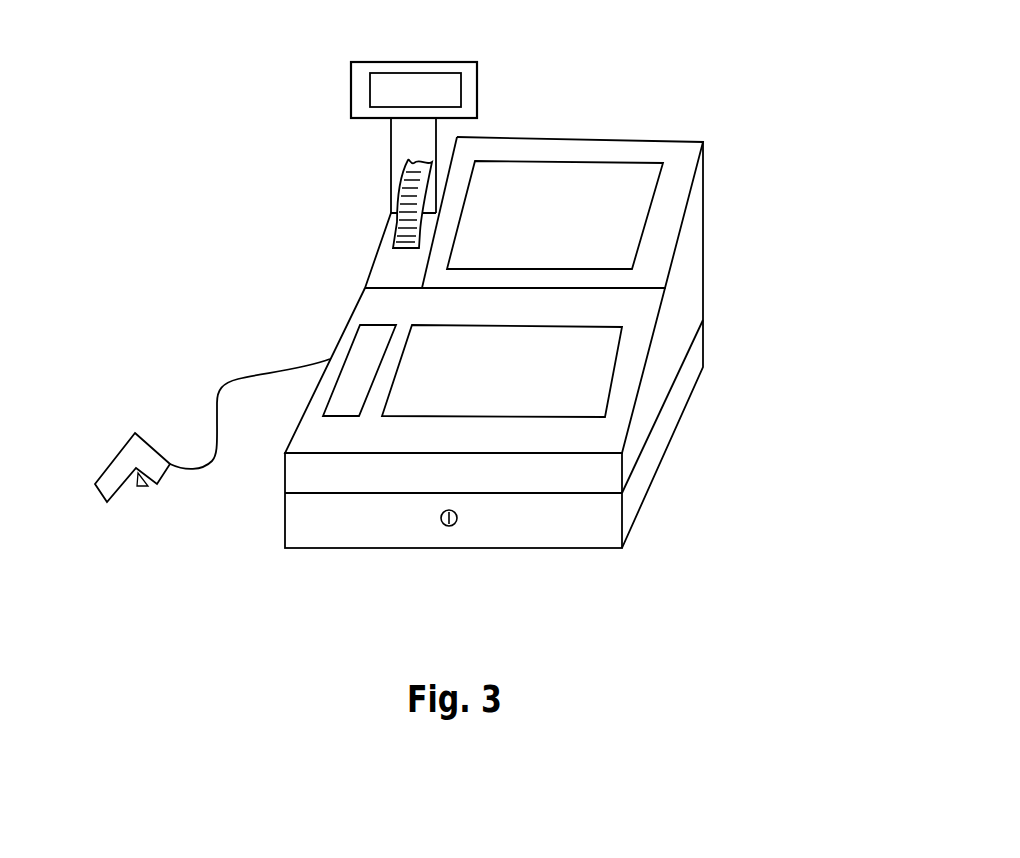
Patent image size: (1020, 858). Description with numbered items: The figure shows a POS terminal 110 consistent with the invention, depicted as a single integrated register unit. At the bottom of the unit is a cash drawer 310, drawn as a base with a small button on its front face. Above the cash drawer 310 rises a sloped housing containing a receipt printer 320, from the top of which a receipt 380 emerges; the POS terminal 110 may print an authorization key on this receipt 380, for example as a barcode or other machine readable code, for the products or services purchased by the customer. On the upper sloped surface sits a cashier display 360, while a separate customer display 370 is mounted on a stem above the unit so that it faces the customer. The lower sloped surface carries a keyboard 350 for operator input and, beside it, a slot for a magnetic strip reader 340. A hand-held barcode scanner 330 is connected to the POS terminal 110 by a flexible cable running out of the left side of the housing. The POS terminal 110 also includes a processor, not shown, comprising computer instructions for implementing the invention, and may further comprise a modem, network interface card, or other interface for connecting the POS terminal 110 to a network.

The POS terminal 110 is at (770, 130).
The cash drawer 310 is at (283, 522).
The receipt printer 320 is at (367, 276).
The barcode scanner 330 is at (117, 462).
The magnetic strip reader 340 is at (355, 345).
The keyboard 350 is at (590, 325).
The cashier display 360 is at (612, 162).
The customer display 370 is at (443, 61).
The receipt 380 is at (397, 222).